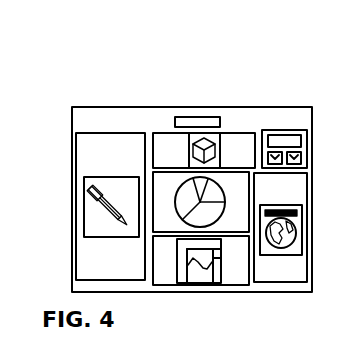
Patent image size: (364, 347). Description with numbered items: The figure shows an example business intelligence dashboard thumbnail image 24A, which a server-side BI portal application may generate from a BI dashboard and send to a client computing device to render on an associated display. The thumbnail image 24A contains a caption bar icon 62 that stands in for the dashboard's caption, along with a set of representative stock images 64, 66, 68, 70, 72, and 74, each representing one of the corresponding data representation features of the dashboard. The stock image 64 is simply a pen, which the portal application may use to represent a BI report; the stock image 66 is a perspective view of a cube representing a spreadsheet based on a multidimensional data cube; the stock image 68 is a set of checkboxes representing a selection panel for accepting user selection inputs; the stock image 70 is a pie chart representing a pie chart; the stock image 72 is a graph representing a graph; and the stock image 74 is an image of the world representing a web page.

The BI dashboard thumbnail image 24A is at (178, 165).
The caption bar icon 62 is at (197, 97).
The stock image of a pen 64 is at (84, 196).
The stock image of a cube 66 is at (197, 122).
The stock image of a set of checkboxes 68 is at (277, 122).
The stock image of a pie chart 70 is at (252, 202).
The stock image of a graph 72 is at (201, 286).
The stock image of the world 74 is at (282, 255).